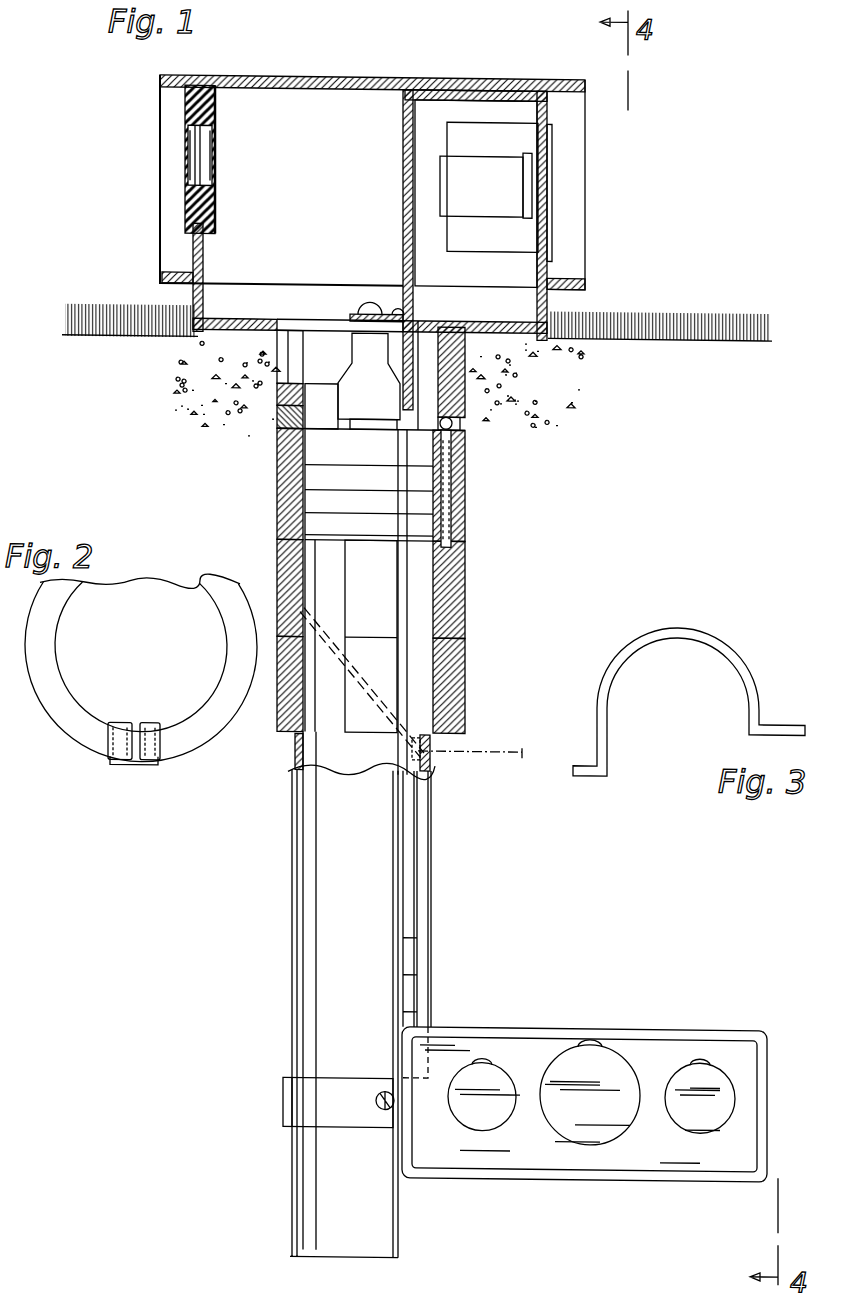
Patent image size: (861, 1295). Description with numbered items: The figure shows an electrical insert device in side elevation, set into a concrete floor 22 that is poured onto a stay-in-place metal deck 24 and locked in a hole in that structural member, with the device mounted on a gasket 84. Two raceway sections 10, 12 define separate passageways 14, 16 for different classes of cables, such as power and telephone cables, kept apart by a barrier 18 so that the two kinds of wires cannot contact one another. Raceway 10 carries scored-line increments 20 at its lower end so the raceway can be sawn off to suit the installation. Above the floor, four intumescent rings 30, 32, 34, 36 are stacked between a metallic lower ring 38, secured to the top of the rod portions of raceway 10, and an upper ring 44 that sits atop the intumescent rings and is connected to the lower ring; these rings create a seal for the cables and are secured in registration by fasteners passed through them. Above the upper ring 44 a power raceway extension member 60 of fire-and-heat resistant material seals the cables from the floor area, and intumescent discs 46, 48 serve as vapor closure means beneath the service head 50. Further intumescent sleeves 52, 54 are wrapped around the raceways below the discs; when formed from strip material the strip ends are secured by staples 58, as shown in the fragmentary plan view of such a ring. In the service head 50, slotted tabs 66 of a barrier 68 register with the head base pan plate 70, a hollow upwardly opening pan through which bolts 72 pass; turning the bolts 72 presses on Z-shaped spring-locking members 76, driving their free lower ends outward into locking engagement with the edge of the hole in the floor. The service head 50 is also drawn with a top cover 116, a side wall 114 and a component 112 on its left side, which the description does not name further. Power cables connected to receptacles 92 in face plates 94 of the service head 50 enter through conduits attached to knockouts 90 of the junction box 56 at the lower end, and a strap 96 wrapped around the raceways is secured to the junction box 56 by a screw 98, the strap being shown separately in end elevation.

In FIG. 1, the raceway section 10 is at (418, 887).
In FIG. 1, the raceway section 12 is at (305, 917).
In FIG. 1, the passageway 14 is at (297, 764).
In FIG. 1, the passageway 16 is at (425, 733).
In FIG. 1, the barrier 18 is at (422, 770).
In FIG. 1, the scored-line increments 20 is at (414, 994).
In FIG. 1, the floor 22 is at (215, 396).
In FIG. 1, the metal deck 24 is at (512, 752).
In FIG. 1, the intumescent ring 30 is at (305, 444).
In FIG. 1, the intumescent ring 32 is at (305, 473).
In FIG. 1, the intumescent ring 34 is at (305, 496).
In FIG. 1, the intumescent ring 36 is at (277, 520).
In FIG. 1, the lower ring 38 is at (467, 533).
In FIG. 1, the upper ring 44 is at (462, 426).
In FIG. 1, the intumescent disc 46 is at (277, 391).
In FIG. 1, the intumescent disc 48 is at (277, 425).
In FIG. 1, the service head 50 is at (330, 177).
In FIG. 1, the intumescent sleeve 52 is at (277, 570).
In FIG. 2, the intumescent sleeve 52 is at (187, 735).
In FIG. 1, the intumescent sleeve 54 is at (277, 710).
In FIG. 1, the junction box 56 is at (548, 1032).
In FIG. 2, the staples 58 is at (118, 762).
In FIG. 1, the power raceway extension member 60 is at (465, 384).
In FIG. 1, the slotted tabs 66 is at (415, 294).
In FIG. 1, the barrier 68 is at (403, 200).
In FIG. 1, the head base pan plate 70 is at (225, 316).
In FIG. 1, the bolts 72 is at (370, 302).
In FIG. 1, the Z-shaped spring-locking members 76 is at (386, 403).
In FIG. 1, the gasket 84 is at (215, 350).
In FIG. 1, the knockouts 90 is at (472, 1108).
In FIG. 1, the power receptacles 92 is at (552, 193).
In FIG. 1, the face plates 94 is at (548, 265).
In FIG. 1, the strap 96 is at (345, 1086).
In FIG. 3, the strap 96 is at (648, 630).
In FIG. 1, the screw 98 is at (385, 1108).
In FIG. 1, the switch 112 is at (188, 160).
In FIG. 1, the side wall 114 is at (203, 247).
In FIG. 1, the top cover 116 is at (528, 52).